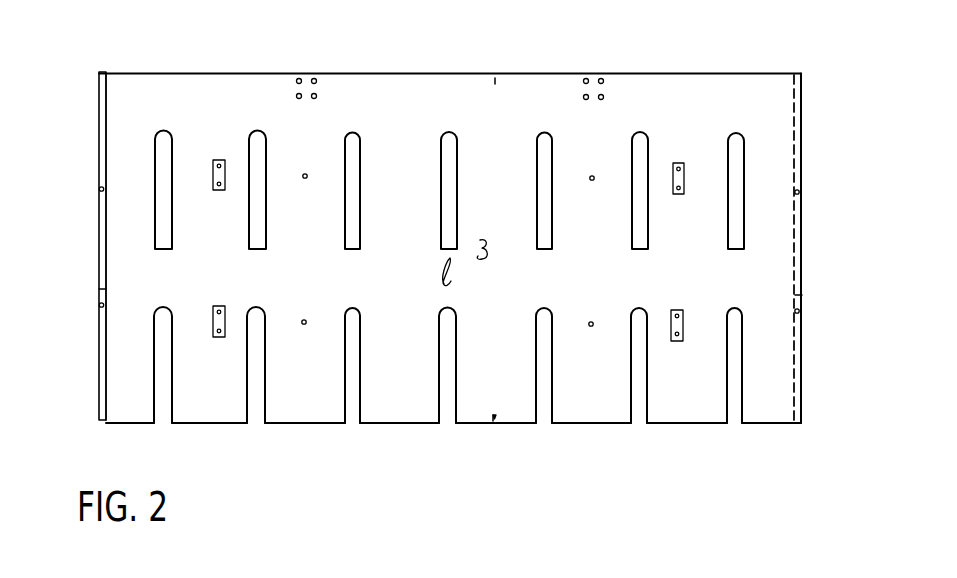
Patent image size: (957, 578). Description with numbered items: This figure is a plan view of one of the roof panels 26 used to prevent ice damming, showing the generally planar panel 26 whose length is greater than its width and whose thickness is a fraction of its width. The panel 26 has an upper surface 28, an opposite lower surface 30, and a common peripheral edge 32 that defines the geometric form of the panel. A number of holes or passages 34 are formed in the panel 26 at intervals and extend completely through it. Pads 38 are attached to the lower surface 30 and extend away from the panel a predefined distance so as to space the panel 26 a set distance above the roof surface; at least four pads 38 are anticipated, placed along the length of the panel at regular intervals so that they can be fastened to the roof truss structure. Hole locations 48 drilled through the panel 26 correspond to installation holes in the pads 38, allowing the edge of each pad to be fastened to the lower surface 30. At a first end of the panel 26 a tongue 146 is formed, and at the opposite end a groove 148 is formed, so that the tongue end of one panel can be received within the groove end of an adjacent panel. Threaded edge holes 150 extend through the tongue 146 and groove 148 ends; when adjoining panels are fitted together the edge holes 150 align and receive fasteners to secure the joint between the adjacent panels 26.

The panel 26 is at (524, 63).
The upper surface 28 is at (636, 100).
The lower surface 30 is at (680, 100).
The peripheral edge 32 is at (400, 73).
The holes or passages 34 is at (441, 142).
The pads 38 is at (688, 178).
The hole locations 48 is at (303, 180).
The tongue 146 is at (103, 107).
The groove 148 is at (798, 125).
The threaded edge holes 150 is at (100, 188).